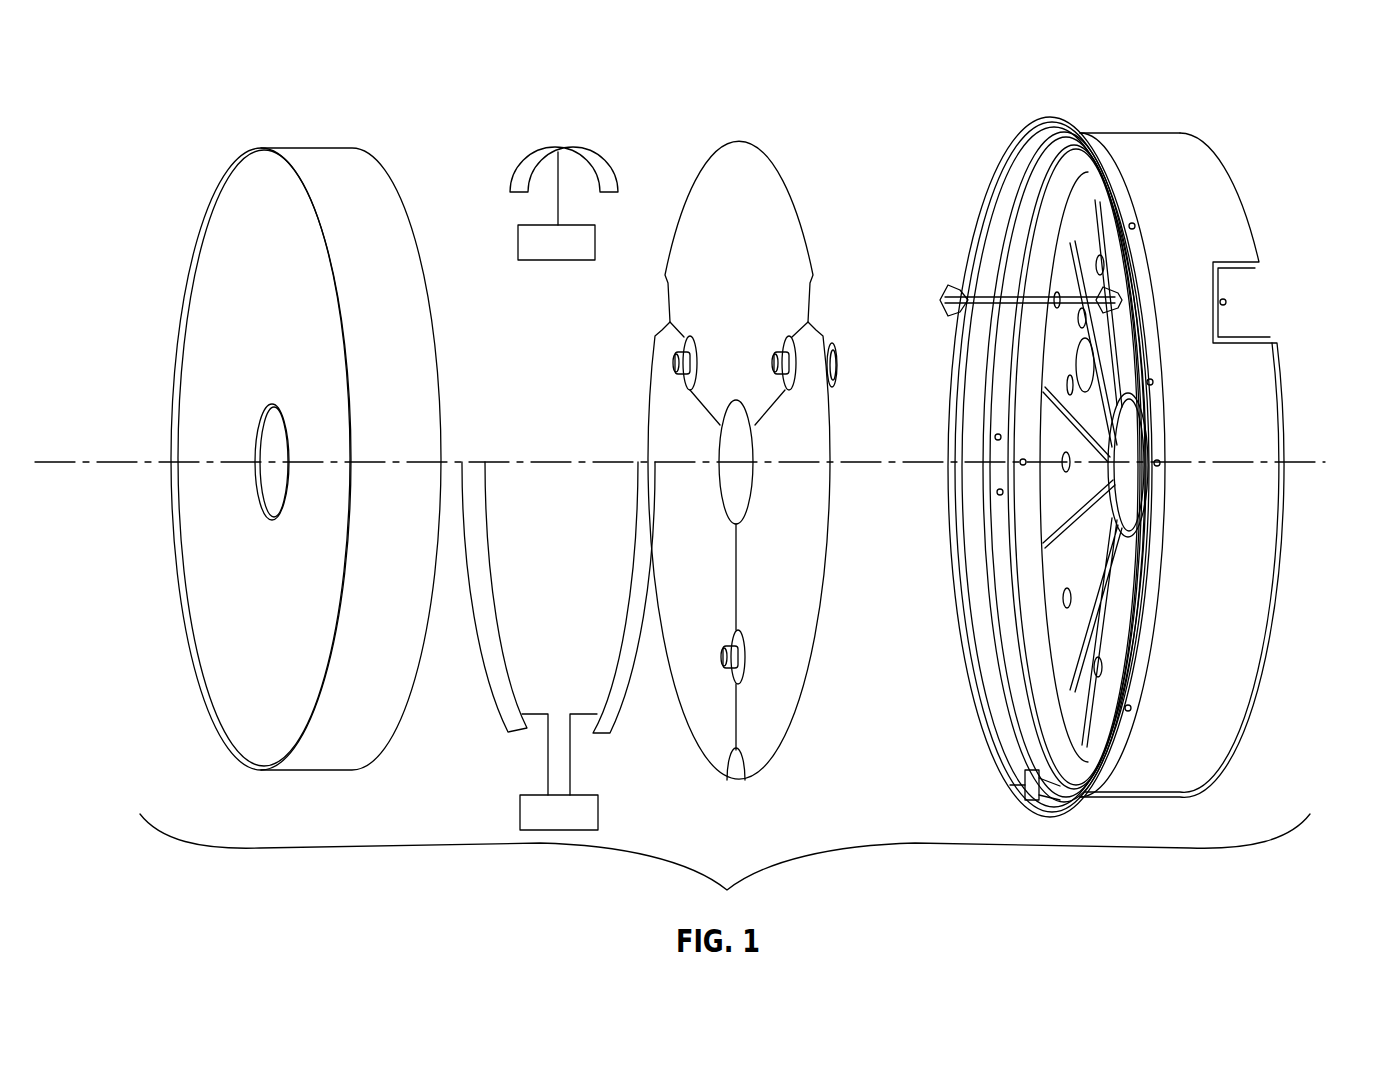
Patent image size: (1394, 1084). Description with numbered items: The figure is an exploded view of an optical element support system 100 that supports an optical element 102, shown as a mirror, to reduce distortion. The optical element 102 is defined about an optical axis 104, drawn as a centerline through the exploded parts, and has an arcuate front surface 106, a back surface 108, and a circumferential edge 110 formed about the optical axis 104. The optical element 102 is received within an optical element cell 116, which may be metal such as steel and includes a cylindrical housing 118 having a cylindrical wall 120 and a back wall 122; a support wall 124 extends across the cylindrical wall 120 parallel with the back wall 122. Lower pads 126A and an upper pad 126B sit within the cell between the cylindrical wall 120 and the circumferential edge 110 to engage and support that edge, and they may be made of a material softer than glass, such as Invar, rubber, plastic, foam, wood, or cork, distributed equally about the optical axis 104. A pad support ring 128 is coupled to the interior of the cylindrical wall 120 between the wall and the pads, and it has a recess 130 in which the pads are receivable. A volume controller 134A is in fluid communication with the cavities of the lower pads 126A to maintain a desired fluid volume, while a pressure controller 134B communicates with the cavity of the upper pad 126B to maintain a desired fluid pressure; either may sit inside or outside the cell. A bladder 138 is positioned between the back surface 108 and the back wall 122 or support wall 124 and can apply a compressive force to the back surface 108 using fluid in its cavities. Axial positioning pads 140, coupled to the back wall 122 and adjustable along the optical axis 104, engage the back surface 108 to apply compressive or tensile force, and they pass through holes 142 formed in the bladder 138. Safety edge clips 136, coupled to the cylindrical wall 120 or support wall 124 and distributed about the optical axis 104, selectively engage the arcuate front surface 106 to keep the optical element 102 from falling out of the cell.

The optical element support system 100 is at (1286, 82).
The optical element 102 is at (288, 426).
The optical axis 104 is at (55, 458).
The arcuate front surface 106 is at (240, 722).
The back surface 108 is at (388, 148).
The circumferential edge 110 is at (318, 148).
The optical element cell 116 is at (1144, 453).
The cylindrical housing 118 is at (1232, 433).
The cylindrical wall 120 is at (1133, 142).
The back wall 122 is at (1305, 420).
The support wall 124 is at (1110, 585).
The lower pad 126A is at (505, 722).
The upper pad 126B is at (558, 150).
The pad support ring 128 is at (1038, 178).
The recess 130 is at (1040, 215).
The volume controller 134A is at (530, 806).
The pressure controller 134B is at (532, 240).
The safety edge clip 136 is at (1120, 300).
The bladder 138 is at (728, 176).
The axial positioning pad 140 is at (787, 380).
The hole 142 is at (787, 342).